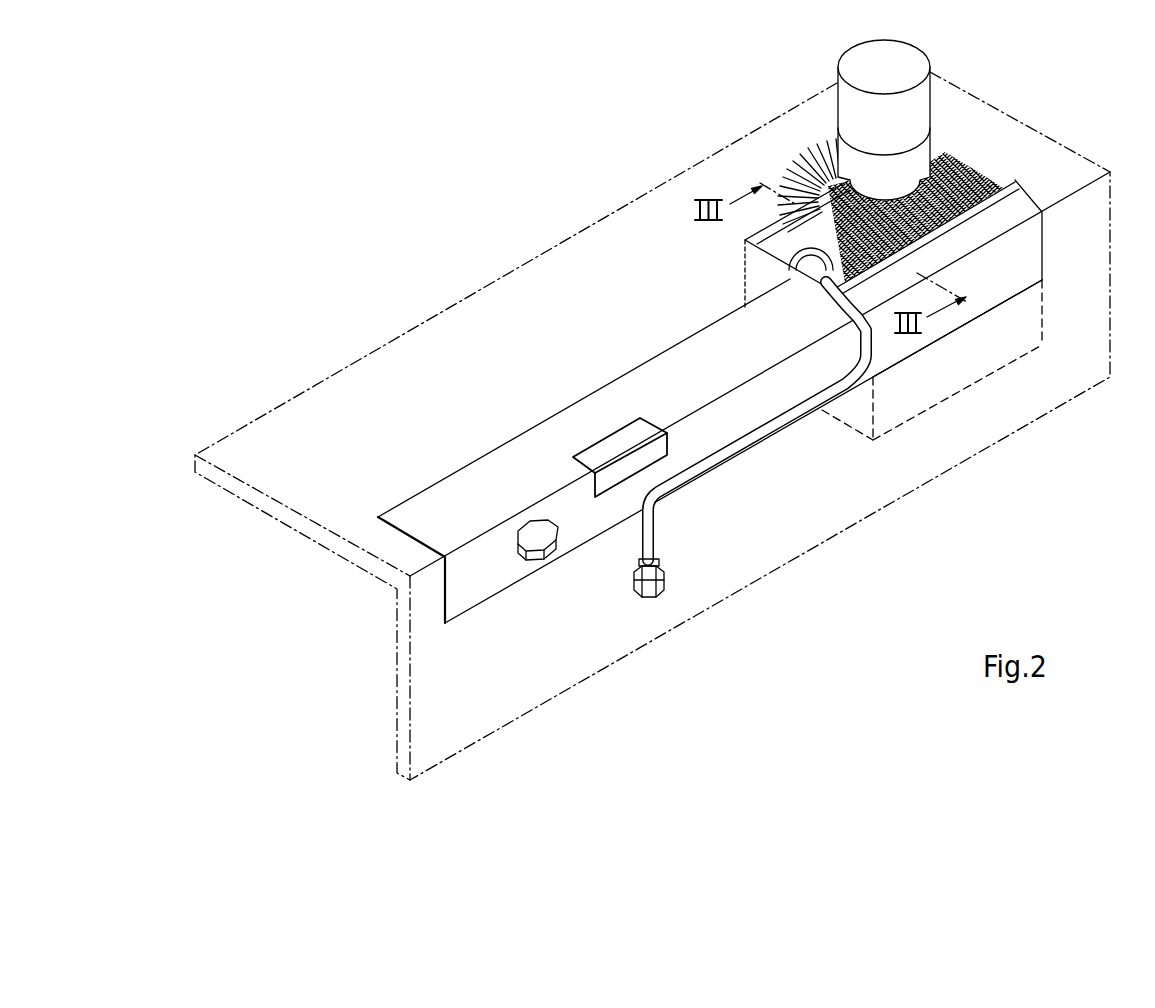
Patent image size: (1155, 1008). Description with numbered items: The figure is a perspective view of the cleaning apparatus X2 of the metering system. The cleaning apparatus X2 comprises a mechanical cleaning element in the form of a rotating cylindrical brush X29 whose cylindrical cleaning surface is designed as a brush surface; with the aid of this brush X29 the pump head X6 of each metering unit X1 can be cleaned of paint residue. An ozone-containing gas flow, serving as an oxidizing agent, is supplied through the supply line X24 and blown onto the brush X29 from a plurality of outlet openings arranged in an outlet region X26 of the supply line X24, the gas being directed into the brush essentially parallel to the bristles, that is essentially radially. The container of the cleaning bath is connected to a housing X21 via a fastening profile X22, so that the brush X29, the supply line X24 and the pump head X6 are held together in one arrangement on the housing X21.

The metering unit X1 is at (826, 105).
The cleaning apparatus X2 is at (974, 424).
The pump head X6 is at (843, 155).
The housing X21 is at (487, 297).
The fastening profile X22 is at (523, 455).
The supply line X24 is at (655, 533).
The outlet region X26 is at (963, 213).
The cylindrical brush X29 is at (958, 180).